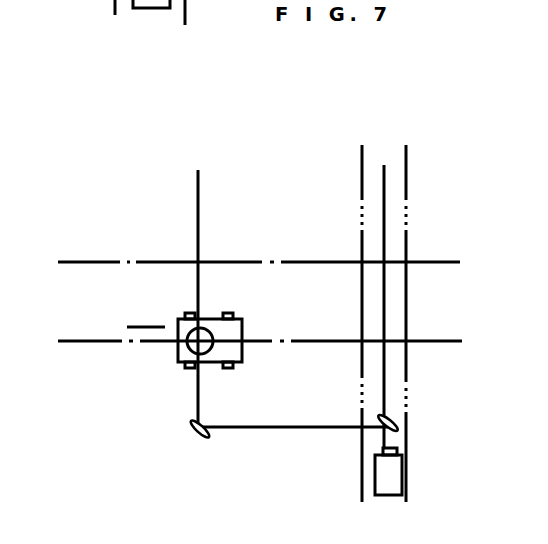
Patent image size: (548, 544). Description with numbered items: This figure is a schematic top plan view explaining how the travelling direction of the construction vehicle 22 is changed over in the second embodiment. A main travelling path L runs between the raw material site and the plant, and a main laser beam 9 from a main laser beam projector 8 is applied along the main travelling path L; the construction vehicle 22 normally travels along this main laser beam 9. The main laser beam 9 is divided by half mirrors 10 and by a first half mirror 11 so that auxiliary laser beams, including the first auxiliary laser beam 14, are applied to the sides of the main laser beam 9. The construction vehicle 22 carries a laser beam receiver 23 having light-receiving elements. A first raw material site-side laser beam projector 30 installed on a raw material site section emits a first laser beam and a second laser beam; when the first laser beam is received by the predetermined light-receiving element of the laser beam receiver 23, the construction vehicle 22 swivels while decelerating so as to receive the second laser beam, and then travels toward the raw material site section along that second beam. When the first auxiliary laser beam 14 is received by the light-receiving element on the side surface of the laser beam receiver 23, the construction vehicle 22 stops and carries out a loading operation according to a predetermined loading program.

The first auxiliary laser beam 14 is at (197, 218).
The first raw material site-side laser beam projector 30 is at (255, 260).
The construction vehicle 22 is at (242, 325).
The laser beam receiver 23 is at (178, 352).
The main travelling path L is at (408, 228).
The main laser beam 9 is at (385, 378).
The half mirrors 10 is at (398, 425).
The first half mirror 11 is at (190, 432).
The main laser beam projector 8 is at (408, 470).